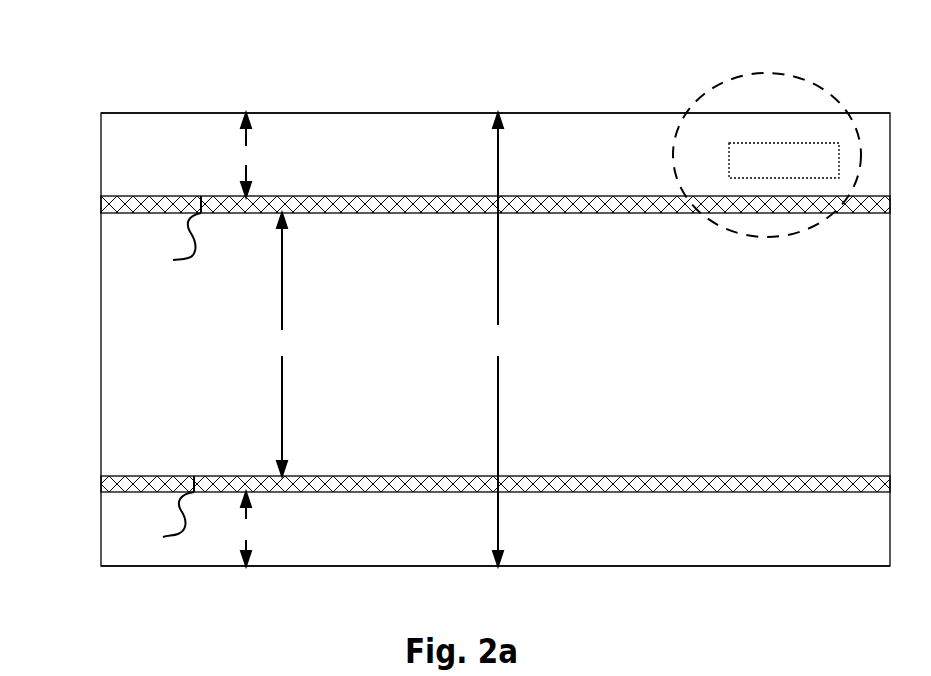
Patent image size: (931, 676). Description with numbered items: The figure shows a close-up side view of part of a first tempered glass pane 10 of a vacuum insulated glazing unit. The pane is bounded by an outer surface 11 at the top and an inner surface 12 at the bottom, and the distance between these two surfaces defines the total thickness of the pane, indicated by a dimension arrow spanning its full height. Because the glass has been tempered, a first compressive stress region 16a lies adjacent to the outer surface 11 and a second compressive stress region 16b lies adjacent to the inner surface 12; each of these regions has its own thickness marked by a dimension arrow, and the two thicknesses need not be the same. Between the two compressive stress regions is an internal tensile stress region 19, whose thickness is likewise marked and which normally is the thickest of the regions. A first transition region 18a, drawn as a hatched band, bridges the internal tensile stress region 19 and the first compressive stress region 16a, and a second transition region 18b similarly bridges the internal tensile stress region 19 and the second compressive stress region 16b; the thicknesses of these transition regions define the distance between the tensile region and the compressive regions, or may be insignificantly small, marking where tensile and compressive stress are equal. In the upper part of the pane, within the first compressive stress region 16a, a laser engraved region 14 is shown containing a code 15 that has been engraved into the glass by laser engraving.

The first tempered glass pane 10 is at (168, 79).
The outer surface 11 is at (341, 113).
The inner surface 12 is at (349, 566).
The laser engraved region 14 is at (818, 158).
The code 15 is at (760, 158).
The first compressive stress region 16a is at (130, 169).
The second compressive stress region 16b is at (130, 519).
The first transition region 18a is at (101, 204).
The second transition region 18b is at (101, 484).
The internal tensile stress region 19 is at (130, 339).